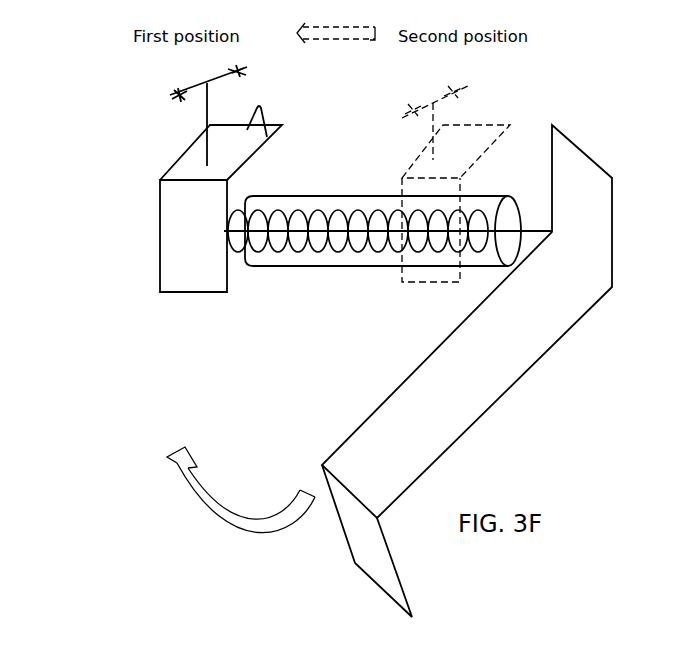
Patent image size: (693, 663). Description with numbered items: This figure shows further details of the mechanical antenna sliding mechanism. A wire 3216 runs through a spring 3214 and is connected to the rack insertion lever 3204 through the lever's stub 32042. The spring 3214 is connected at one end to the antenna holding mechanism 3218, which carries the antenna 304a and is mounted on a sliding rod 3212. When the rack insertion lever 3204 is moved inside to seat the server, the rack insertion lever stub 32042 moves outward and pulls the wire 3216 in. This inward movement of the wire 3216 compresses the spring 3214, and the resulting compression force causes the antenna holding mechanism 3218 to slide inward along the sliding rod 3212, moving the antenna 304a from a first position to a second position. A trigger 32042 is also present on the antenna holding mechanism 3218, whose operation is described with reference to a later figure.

The antenna 304a is at (202, 116).
The rack insertion lever stub 32042 is at (273, 117).
The antenna holding mechanism 3218 is at (158, 212).
The sliding rod 3212 is at (273, 190).
The wire 3216 is at (342, 272).
The spring 3214 is at (423, 188).
The rack insertion lever 3204 is at (497, 400).